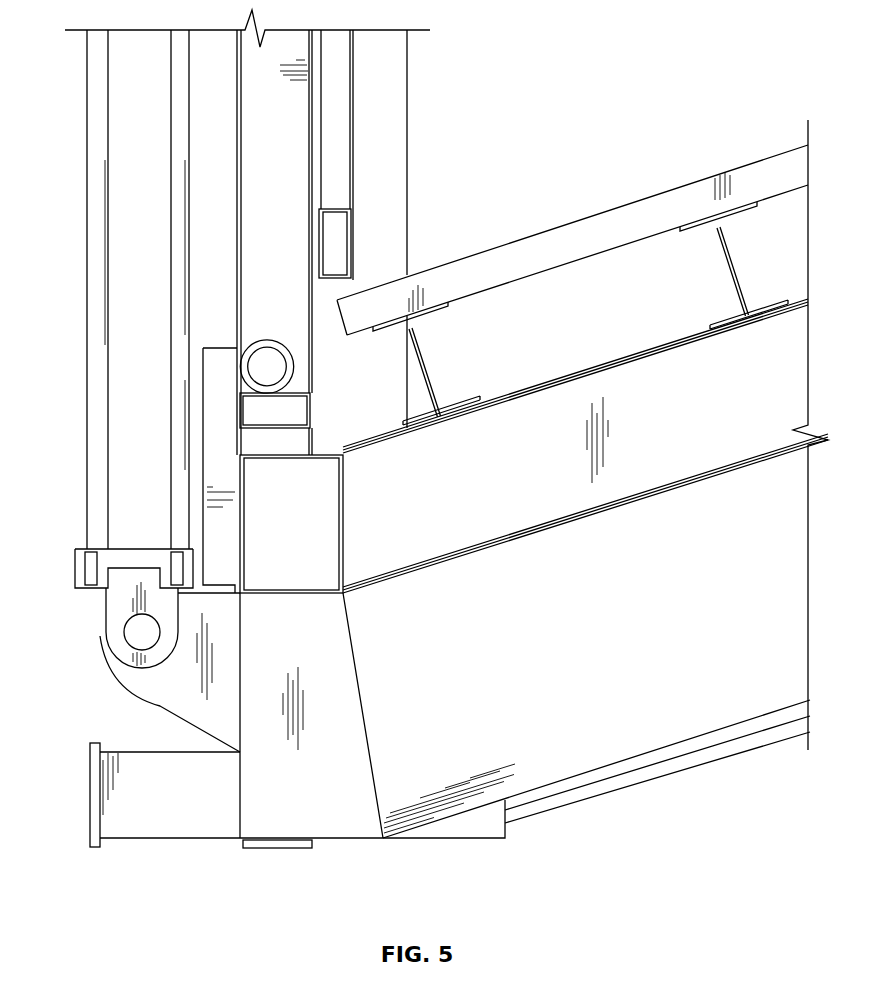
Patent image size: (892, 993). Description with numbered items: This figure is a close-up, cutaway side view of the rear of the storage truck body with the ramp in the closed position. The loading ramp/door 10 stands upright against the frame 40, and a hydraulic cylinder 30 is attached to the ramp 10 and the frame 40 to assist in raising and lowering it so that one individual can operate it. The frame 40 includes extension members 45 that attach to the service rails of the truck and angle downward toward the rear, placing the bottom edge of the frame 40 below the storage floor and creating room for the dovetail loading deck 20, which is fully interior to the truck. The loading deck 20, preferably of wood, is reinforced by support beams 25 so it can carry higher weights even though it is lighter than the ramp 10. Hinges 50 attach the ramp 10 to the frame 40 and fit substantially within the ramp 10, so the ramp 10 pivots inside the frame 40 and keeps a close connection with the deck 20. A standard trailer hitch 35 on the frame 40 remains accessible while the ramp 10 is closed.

The loading ramp/door 10 is at (235, 96).
The dovetail loading deck 20 is at (572, 222).
The support beams 25 is at (432, 365).
The hydraulic cylinder 30 is at (93, 182).
The trailer hitch 35 is at (150, 840).
The frame 40 is at (241, 538).
The extension members 45 is at (642, 468).
The hinges 50 is at (265, 338).